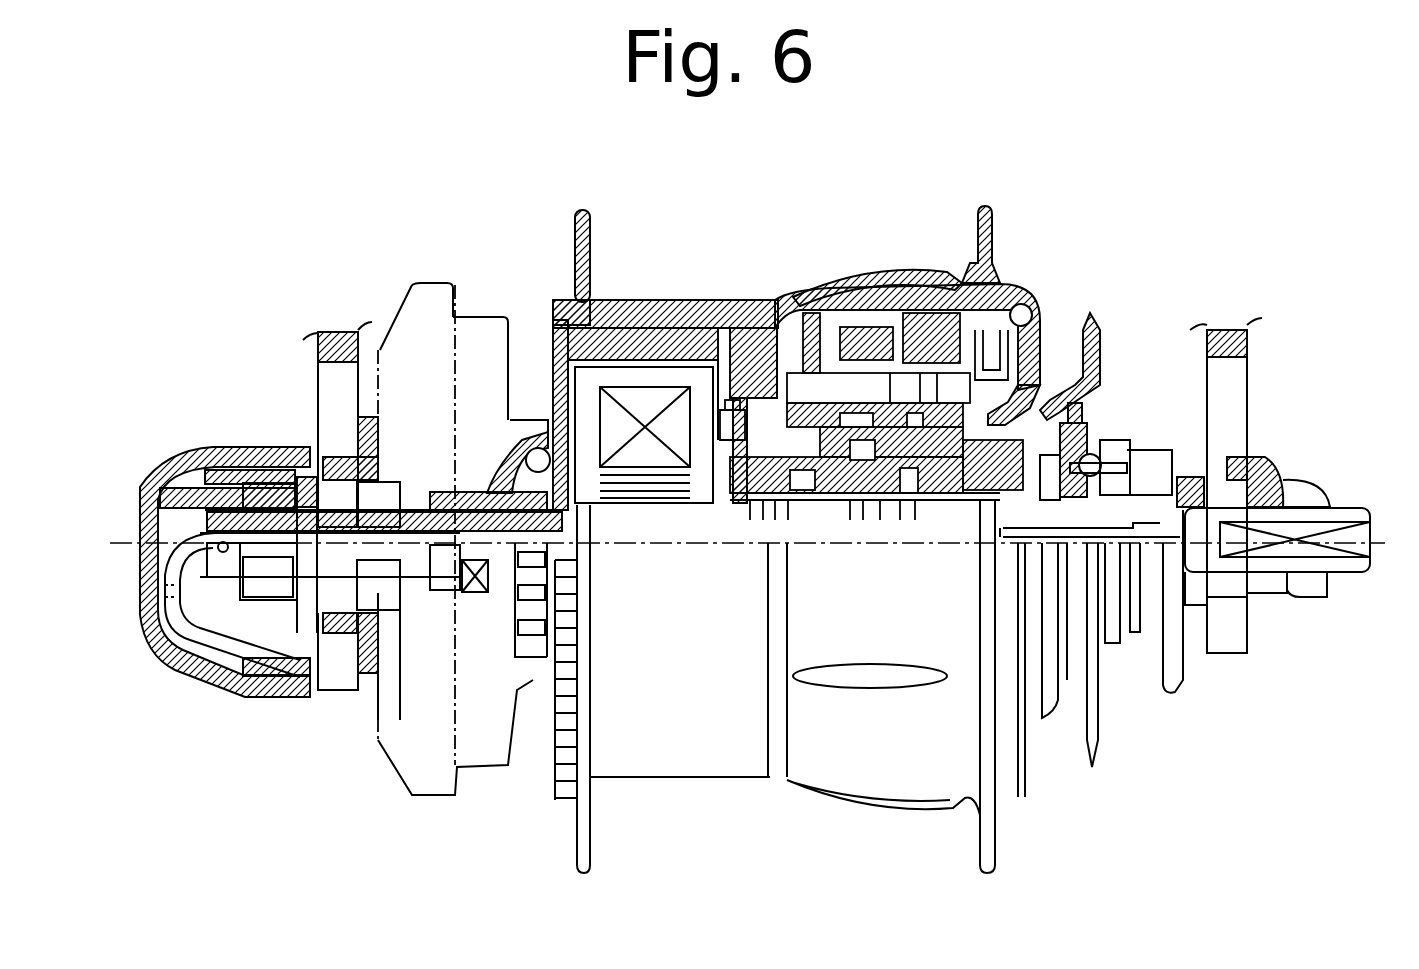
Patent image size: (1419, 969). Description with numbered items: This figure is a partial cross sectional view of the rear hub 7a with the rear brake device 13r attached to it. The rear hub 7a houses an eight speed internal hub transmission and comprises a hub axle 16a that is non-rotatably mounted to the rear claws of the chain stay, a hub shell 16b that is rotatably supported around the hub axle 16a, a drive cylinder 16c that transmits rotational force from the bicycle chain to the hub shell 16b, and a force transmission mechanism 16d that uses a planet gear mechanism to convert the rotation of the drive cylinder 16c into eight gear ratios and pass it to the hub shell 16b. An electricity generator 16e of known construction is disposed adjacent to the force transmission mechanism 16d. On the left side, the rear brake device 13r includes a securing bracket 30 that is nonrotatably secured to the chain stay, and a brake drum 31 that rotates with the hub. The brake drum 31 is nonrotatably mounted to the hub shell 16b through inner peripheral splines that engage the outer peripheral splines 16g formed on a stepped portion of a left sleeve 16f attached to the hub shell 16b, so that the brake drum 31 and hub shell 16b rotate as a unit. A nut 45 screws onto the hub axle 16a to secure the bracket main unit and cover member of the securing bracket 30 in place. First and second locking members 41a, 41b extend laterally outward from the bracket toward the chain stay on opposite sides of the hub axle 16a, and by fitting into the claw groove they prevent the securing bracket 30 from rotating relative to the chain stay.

The securing bracket 30 is at (418, 282).
The rear brake device 13r is at (436, 285).
The brake drum 31 is at (475, 312).
The left sleeve 16f is at (550, 277).
The outer peripheral splines 16g is at (535, 385).
The electricity generator 16e is at (652, 378).
The hub shell 16b is at (750, 322).
The rear hub 7a is at (858, 250).
The force transmission mechanism 16d is at (918, 290).
The drive cylinder 16c is at (1040, 345).
The hub axle 16a is at (1342, 508).
The first locking member 41a is at (327, 450).
The second locking member 41b is at (333, 632).
The nut 45 is at (378, 593).